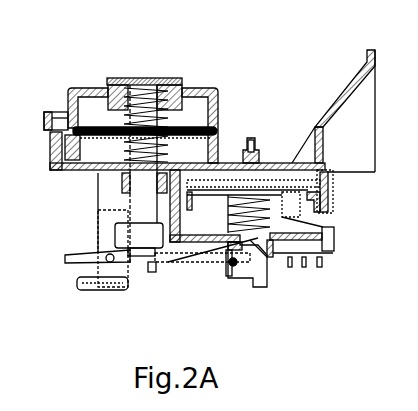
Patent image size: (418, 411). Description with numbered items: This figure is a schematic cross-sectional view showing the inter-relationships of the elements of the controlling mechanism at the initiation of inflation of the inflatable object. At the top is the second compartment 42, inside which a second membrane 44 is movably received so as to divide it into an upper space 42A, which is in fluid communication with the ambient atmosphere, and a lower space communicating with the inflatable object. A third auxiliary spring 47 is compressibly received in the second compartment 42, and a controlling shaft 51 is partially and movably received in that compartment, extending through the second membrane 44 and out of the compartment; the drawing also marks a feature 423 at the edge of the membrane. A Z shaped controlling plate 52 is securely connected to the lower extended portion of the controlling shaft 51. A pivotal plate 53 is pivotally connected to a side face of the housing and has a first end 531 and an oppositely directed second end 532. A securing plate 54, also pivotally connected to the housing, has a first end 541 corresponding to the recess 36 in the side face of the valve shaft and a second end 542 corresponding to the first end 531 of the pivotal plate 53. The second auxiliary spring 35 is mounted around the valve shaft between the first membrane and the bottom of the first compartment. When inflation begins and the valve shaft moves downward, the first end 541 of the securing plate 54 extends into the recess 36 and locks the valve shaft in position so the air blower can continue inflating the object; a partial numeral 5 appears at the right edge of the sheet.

The second compartment 42 is at (80, 88).
The third auxiliary spring 47 is at (148, 97).
The upper space 42A is at (190, 117).
The second membrane 44 is at (200, 128).
The seal end 423 is at (213, 132).
The second auxiliary spring 35 is at (275, 200).
The recess 36 is at (250, 242).
The controlling shaft 51 is at (145, 197).
The first end 531 is at (147, 263).
The pivotal plate 53 is at (72, 262).
The second end 532 is at (77, 258).
The Z shaped controlling plate 52 is at (92, 284).
The second end 542 is at (152, 272).
The securing plate 54 is at (192, 273).
The first end 541 is at (228, 276).
The device 5 is at (412, 259).